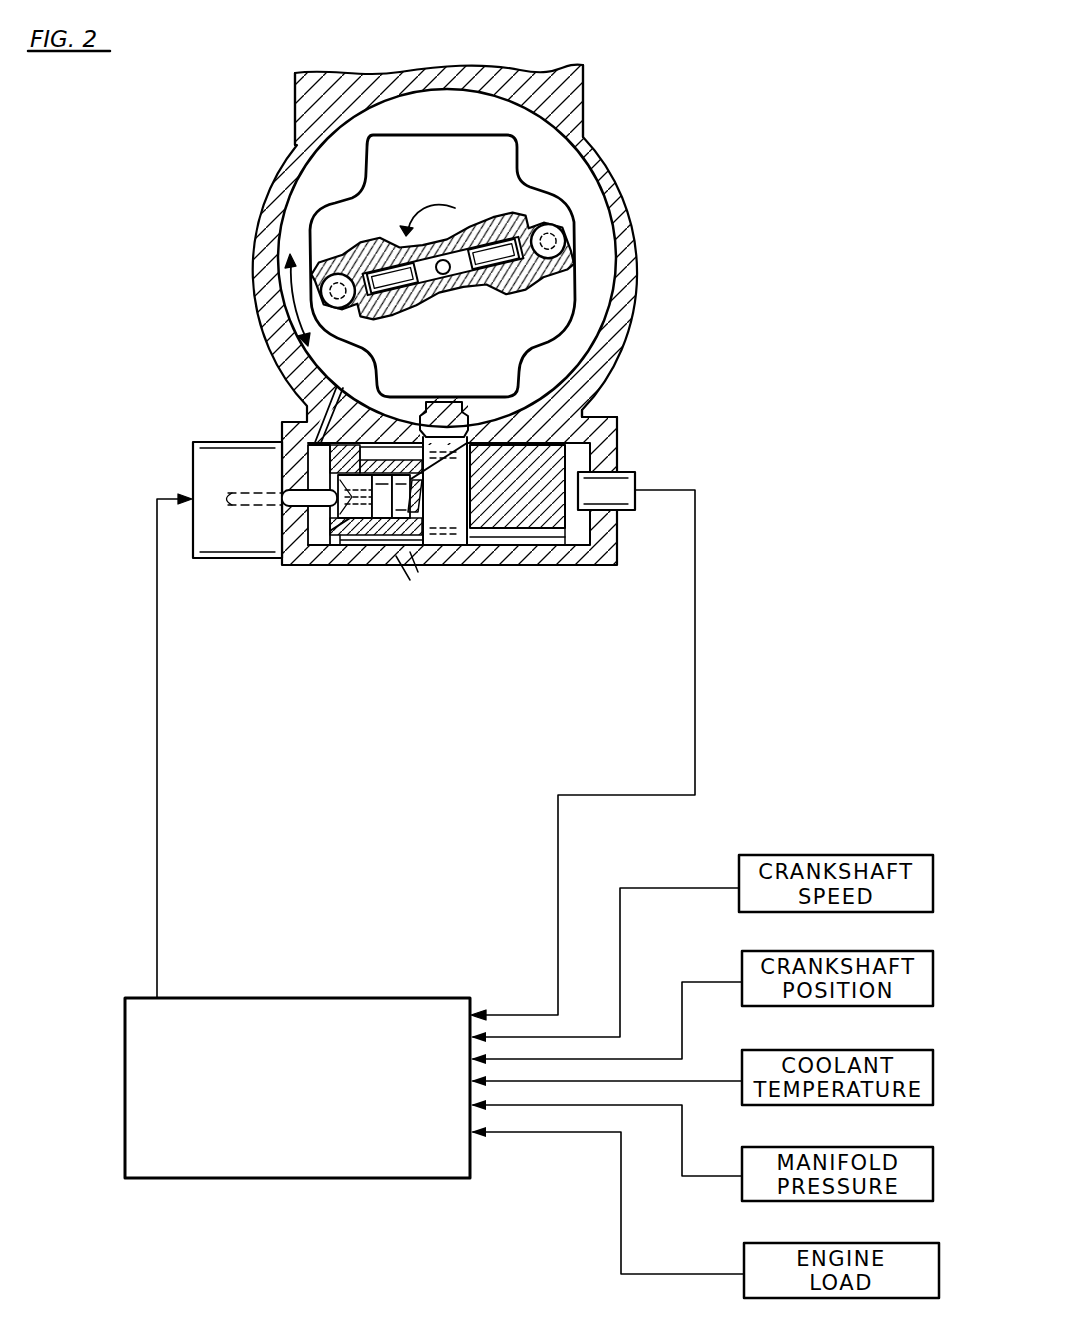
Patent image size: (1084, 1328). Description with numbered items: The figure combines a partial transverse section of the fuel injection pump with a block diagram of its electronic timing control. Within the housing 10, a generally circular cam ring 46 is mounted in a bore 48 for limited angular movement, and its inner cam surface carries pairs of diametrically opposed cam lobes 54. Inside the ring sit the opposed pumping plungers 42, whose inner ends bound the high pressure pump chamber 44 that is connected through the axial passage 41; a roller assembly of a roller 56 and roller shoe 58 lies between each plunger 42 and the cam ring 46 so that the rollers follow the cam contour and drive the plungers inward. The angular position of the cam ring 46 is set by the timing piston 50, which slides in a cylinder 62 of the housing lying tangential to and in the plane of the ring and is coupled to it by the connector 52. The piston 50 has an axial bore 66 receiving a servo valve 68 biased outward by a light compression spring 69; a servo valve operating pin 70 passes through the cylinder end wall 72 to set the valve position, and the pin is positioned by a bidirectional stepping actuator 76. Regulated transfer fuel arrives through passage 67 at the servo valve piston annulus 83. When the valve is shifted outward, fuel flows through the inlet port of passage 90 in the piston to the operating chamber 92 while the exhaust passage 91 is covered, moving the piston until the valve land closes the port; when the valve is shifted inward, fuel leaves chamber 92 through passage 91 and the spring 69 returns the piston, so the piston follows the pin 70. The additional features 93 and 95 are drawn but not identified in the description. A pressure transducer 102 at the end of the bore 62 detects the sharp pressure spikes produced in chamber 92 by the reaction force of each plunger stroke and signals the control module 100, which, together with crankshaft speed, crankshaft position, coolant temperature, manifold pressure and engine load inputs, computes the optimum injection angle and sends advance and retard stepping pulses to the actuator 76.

The housing 10 is at (268, 196).
The cam lobes 54 is at (355, 192).
The high pressure pump chamber 44 is at (455, 207).
The roller 56 is at (565, 222).
The cam ring 46 is at (596, 233).
The roller shoe 58 is at (560, 268).
The bore 48 is at (606, 298).
The pumping plungers 42 is at (405, 280).
The axial passage 41 is at (446, 277).
The fluid passage 95 is at (322, 405).
The passage 90 is at (533, 448).
The cylinder end wall 72 is at (318, 458).
The operating chamber 92 is at (610, 417).
The actuator 76 is at (193, 462).
The pressure sensor or transducer 102 is at (632, 474).
The axial bore 66 is at (340, 490).
The compression spring 69 is at (414, 503).
The servo valve operating pin 70 is at (322, 510).
The timing piston 50 is at (574, 519).
The end plug 93 is at (317, 546).
The servo valve 68 is at (352, 533).
The servo valve piston annulus 83 is at (370, 528).
The passage 67 is at (398, 565).
The connector 52 is at (443, 522).
The exhaust passage 91 is at (503, 535).
The cylinder 62 is at (574, 545).
The control module 100 is at (330, 970).